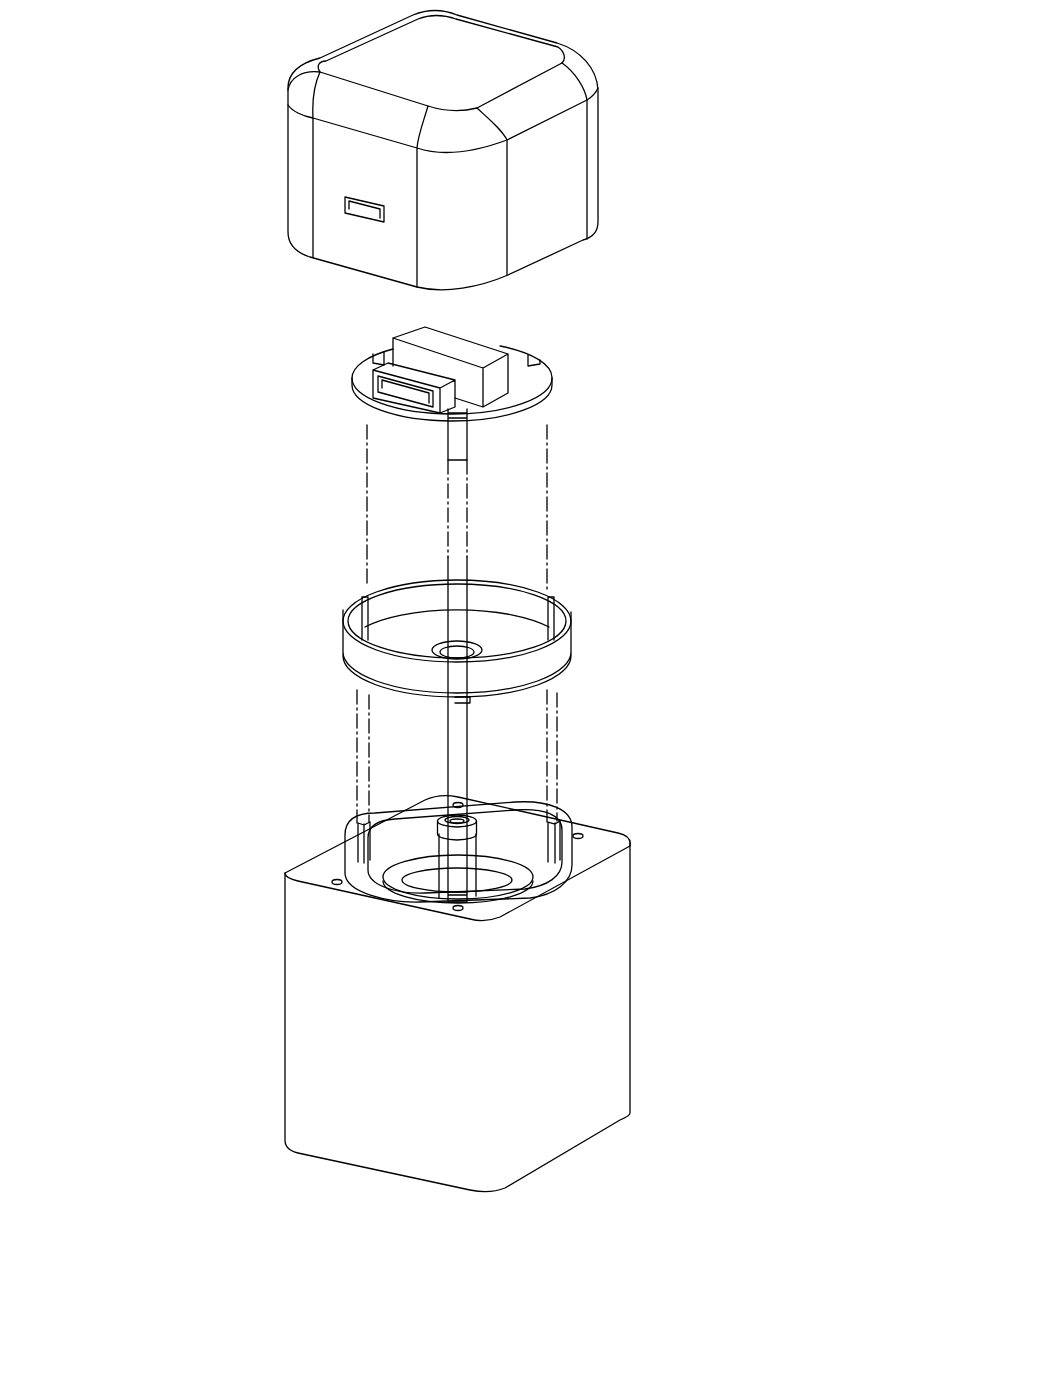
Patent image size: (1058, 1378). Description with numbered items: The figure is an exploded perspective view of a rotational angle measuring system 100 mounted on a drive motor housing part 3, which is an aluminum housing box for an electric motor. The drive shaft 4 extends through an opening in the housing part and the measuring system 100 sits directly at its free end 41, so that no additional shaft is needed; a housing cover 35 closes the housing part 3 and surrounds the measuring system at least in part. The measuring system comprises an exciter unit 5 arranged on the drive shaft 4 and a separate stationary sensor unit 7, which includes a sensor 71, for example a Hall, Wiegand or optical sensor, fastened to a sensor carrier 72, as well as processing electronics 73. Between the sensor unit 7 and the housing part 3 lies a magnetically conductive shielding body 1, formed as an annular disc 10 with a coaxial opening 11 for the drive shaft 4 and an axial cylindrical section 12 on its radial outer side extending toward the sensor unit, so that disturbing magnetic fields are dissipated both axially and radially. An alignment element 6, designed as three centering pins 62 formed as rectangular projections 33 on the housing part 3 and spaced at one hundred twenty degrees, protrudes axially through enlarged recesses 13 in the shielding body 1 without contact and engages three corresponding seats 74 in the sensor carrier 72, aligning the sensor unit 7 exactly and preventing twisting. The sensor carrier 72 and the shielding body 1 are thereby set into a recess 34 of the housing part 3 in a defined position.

The rotational angle measuring system 100 is at (592, 392).
The housing cover 35 is at (515, 62).
The sensor unit 7 is at (514, 336).
The sensor 71 is at (420, 338).
The sensor carrier 72 is at (523, 395).
The processing electronics 73 is at (395, 372).
The seats 74 is at (542, 365).
The shielding body 1 is at (295, 645).
The annular disc 10 is at (390, 640).
The coaxial opening 11 is at (456, 636).
The axial section 12 is at (563, 652).
The recess 13 is at (567, 592).
The alignment element 6 is at (646, 759).
The drive motor housing part 3 is at (567, 1008).
The projections 33 is at (342, 819).
The recess 34 is at (368, 871).
The drive shaft 4 is at (457, 872).
The free end 41 is at (484, 830).
The exciter unit 5 is at (432, 838).
The centering pins 62 is at (568, 835).